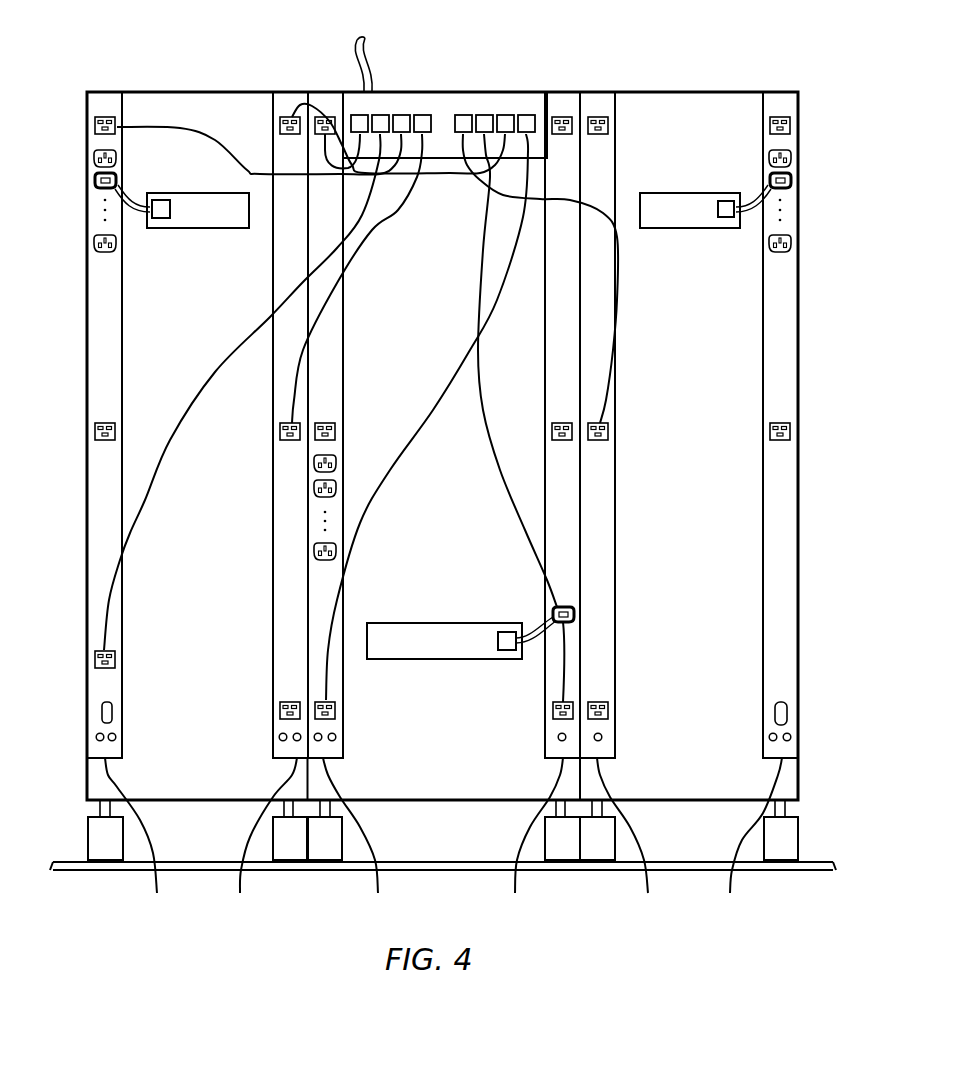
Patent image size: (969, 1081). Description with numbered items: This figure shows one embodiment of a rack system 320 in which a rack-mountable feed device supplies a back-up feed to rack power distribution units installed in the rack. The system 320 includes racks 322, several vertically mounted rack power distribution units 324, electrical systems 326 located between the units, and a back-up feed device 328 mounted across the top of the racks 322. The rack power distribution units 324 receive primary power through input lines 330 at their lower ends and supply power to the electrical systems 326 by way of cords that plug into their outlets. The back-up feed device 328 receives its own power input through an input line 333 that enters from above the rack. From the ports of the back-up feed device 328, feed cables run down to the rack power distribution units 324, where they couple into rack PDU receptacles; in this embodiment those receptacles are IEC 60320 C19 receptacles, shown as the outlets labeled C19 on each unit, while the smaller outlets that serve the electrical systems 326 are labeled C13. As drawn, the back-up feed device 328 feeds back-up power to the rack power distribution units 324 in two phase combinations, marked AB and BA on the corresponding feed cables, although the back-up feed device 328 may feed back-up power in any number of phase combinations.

The system 320 is at (155, 55).
The racks 322 is at (442, 454).
The rack power distribution units 324 is at (93, 535).
The electrical systems 326 is at (443, 422).
The back-up feed device 328 is at (475, 100).
The input lines 330 is at (150, 842).
The input line 333 is at (352, 60).
The IEC 60320 C19 receptacles C19 is at (611, 127).
The C13 outlet C13 is at (797, 183).
The AB phase combination AB is at (242, 392).
The BA phase combination BA is at (563, 278).